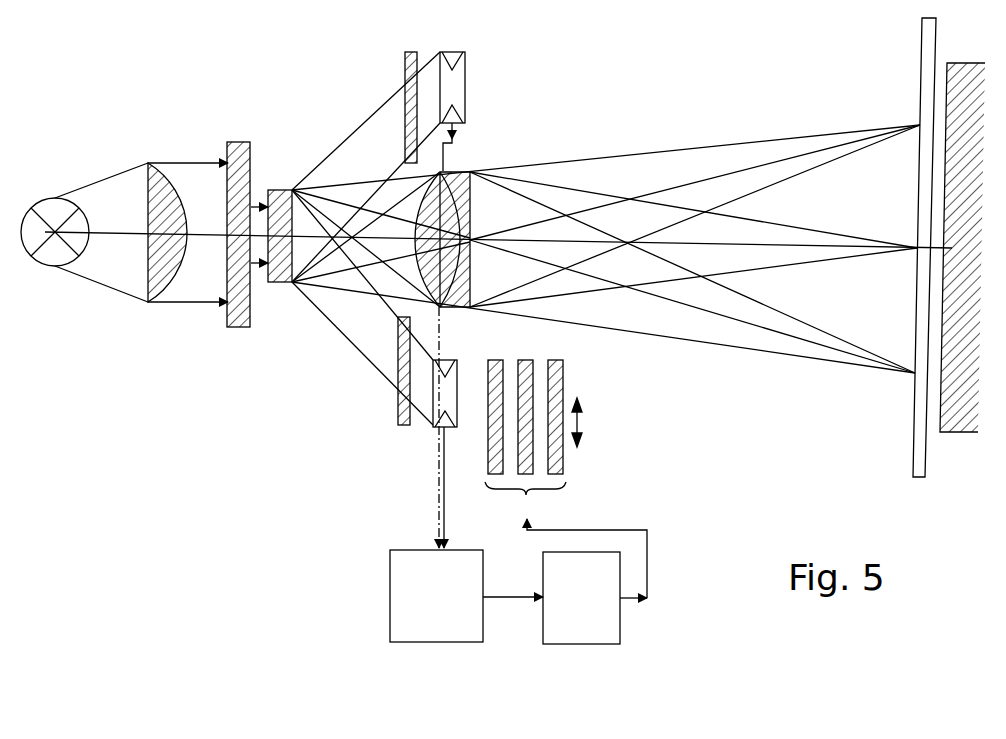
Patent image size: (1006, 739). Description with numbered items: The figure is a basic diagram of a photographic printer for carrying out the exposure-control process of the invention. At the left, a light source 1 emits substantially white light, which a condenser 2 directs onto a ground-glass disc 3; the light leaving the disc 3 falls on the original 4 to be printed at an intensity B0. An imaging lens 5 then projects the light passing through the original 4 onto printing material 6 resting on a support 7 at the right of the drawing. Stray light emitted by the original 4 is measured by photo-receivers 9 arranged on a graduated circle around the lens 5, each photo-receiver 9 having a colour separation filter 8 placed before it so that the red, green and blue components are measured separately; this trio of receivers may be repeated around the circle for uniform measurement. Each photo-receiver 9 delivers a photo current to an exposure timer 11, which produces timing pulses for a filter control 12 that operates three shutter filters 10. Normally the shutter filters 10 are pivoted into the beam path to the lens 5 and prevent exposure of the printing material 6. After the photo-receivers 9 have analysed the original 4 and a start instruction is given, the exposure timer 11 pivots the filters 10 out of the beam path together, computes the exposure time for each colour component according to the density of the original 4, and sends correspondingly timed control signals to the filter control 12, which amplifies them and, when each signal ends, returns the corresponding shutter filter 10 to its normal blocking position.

The light source 1 is at (48, 258).
The condenser 2 is at (160, 288).
The ground-glass disc 3 is at (239, 318).
The original 4 is at (278, 279).
The imaging lens 5 is at (452, 310).
The printing material 6 is at (918, 478).
The support 7 is at (964, 433).
The colour separation filter 8 is at (403, 427).
The photo-receivers 9 is at (459, 88).
The shutter filters 10 is at (566, 479).
The exposure timer 11 is at (395, 623).
The filter control 12 is at (612, 628).
The intensity B0 is at (255, 205).